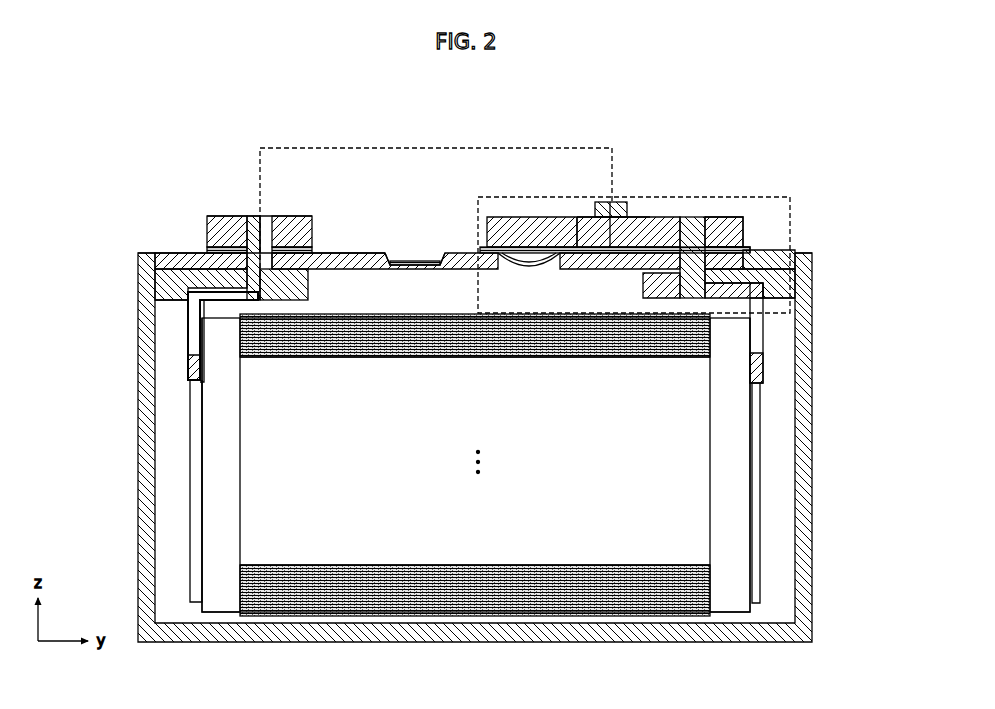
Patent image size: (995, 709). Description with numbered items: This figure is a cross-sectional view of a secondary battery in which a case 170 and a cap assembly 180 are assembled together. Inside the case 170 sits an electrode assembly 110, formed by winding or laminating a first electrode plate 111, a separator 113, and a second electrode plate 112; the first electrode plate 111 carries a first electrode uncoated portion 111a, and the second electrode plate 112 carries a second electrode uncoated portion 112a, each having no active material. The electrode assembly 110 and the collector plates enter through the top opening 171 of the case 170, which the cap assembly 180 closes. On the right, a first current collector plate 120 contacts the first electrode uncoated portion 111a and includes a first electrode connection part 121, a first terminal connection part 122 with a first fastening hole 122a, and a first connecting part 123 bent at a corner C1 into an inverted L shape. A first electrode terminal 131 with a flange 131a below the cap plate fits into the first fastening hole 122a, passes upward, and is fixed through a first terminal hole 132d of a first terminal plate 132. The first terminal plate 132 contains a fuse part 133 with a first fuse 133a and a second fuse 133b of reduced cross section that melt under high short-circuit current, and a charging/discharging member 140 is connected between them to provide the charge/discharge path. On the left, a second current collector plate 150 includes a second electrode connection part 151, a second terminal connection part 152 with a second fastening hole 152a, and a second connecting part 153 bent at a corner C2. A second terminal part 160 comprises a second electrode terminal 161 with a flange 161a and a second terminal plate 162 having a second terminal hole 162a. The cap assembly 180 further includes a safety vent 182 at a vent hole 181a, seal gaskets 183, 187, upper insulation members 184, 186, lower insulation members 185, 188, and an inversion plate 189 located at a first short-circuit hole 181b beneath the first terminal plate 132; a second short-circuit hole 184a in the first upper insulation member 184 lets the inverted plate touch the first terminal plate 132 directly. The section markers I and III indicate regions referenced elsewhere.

The electrode assembly 110 is at (327, 625).
The first electrode plate 111 is at (433, 616).
The first electrode uncoated portion 111a is at (730, 597).
The second electrode plate 112 is at (565, 616).
The second electrode uncoated portion 112a is at (218, 611).
The separator 113 is at (487, 616).
The first current collector plate 120 is at (766, 430).
The first electrode connection part 121 is at (756, 497).
The first terminal connection part 122 is at (760, 260).
The first fastening hole 122a is at (765, 330).
The first connecting part 123 is at (766, 362).
The first electrode terminal 131 is at (698, 217).
The flange 131a is at (640, 297).
The first terminal plate 132 is at (500, 217).
The first terminal hole 132d is at (690, 217).
The fuse part 133 is at (667, 112).
The first fuse 133a is at (577, 247).
The second fuse 133b is at (650, 247).
The charging/discharging member 140 is at (618, 203).
The second current collector plate 150 is at (187, 430).
The second electrode connection part 151 is at (190, 497).
The second terminal connection part 152 is at (235, 288).
The second fastening hole 152a is at (200, 262).
The second connecting part 153 is at (197, 358).
The second terminal part 160 is at (277, 172).
The second electrode terminal 161 is at (256, 216).
The flange 161a is at (306, 284).
The second terminal plate 162 is at (228, 216).
The second terminal hole 162a is at (290, 216).
The case 170 is at (813, 566).
The top opening 171 is at (157, 254).
The cap assembly 180 is at (373, 251).
The vent hole 181a is at (397, 269).
The first short-circuit hole 181b is at (505, 272).
The safety vent 182 is at (420, 253).
The seal gasket 183 is at (725, 262).
The first upper insulation member 184 is at (750, 246).
The second short-circuit hole 184a is at (540, 249).
The lower insulation member 185 is at (770, 278).
The upper insulation member 186 is at (215, 248).
The seal gasket 187 is at (205, 262).
The lower insulation member 188 is at (175, 279).
The inversion plate 189 is at (517, 266).
The corner C1 is at (800, 285).
The corner C2 is at (165, 292).
The section line I is at (293, 148).
The section line III is at (478, 197).